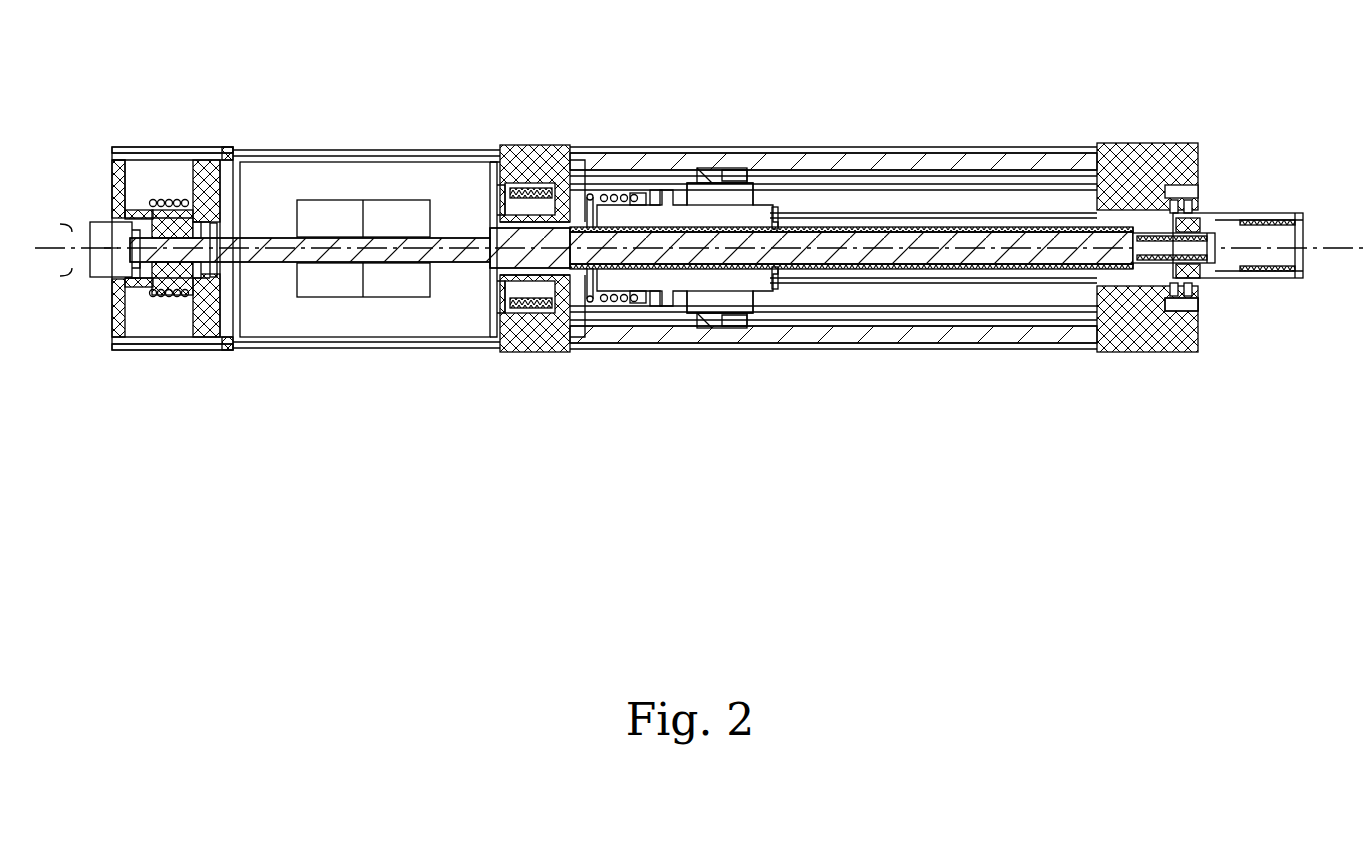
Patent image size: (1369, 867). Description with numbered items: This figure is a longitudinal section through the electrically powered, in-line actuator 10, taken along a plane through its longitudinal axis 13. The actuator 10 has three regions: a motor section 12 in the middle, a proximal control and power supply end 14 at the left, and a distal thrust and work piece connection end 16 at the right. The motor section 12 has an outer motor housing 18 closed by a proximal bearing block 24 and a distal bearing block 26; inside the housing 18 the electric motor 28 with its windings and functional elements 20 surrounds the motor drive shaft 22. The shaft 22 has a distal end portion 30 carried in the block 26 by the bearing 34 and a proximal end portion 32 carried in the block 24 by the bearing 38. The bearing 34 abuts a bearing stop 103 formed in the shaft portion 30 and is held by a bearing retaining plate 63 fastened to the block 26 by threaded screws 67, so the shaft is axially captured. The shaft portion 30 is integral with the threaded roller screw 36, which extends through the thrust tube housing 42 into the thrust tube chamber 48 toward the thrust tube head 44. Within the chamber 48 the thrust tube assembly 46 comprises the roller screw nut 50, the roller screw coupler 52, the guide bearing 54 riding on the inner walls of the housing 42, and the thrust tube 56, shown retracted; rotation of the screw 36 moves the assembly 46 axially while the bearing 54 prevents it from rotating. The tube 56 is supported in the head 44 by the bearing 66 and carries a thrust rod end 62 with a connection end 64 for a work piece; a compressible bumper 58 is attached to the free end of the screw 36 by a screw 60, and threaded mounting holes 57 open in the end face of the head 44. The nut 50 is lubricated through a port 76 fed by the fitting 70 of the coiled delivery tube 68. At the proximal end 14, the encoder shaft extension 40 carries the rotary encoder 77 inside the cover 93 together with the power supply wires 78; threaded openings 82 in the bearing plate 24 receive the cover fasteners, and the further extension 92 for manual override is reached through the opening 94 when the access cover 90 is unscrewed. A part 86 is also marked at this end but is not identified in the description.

The actuator 10 is at (634, 61).
The motor section 12 is at (530, 368).
The longitudinal axis 13 is at (52, 268).
The proximal control and electric power supply end 14 is at (230, 368).
The distal thrust and work piece connection end 16 is at (540, 368).
The outer motor housing 18 is at (413, 160).
The electric motor windings and functional elements 20 is at (372, 205).
The motor drive shaft 22 is at (347, 255).
The proximal bearing plate or block 24 is at (236, 150).
The distal bearing plate or block 26 is at (565, 148).
The electric motor 28 is at (328, 171).
The distal end portion of motor shaft 30 is at (525, 182).
The proximal end portion of motor shaft 32 is at (216, 290).
The bearing 34 is at (508, 355).
The roller screw 36 is at (1060, 258).
The bearing 38 is at (190, 352).
The encoder shaft extension 40 is at (192, 158).
The thrust tube housing 42 is at (1045, 158).
The thrust tube head 44 is at (1128, 145).
The thrust tube assembly 46 is at (795, 207).
The thrust tube chamber 48 is at (1078, 195).
The roller screw nut 50 is at (662, 306).
The roller screw coupler 52 is at (765, 300).
The bearing or guide means 54 is at (742, 175).
The thrust tube 56 is at (975, 222).
The alternate mounting holes 57 is at (1200, 305).
The compressible bumper 58 is at (1190, 228).
The screw 60 is at (1195, 250).
The thrust rod end 62 is at (1280, 262).
The bearing retaining plate 63 is at (508, 165).
The connection end 64 is at (1305, 268).
The bearing 66 is at (1178, 185).
The threaded screws 67 is at (546, 160).
The coiled lubrication delivery tube 68 is at (620, 302).
The lubrication fitting 70 is at (640, 192).
The lubrication port 76 is at (118, 186).
The rotary encoder 77 is at (152, 300).
The electrical power supply wires 78 is at (163, 198).
The threaded openings 82 is at (212, 150).
The flange 86 is at (200, 152).
The motor shaft access cover 90 is at (108, 232).
The further shaft extension 92 is at (122, 286).
The cover 93 is at (118, 150).
The opening 94 is at (113, 334).
The bearing stop 103 is at (522, 367).